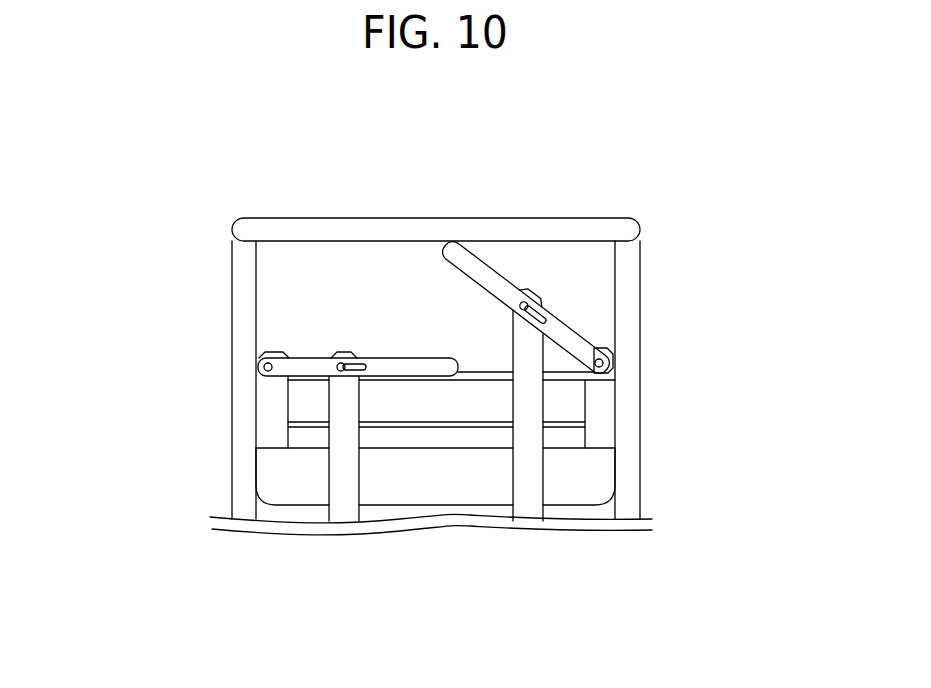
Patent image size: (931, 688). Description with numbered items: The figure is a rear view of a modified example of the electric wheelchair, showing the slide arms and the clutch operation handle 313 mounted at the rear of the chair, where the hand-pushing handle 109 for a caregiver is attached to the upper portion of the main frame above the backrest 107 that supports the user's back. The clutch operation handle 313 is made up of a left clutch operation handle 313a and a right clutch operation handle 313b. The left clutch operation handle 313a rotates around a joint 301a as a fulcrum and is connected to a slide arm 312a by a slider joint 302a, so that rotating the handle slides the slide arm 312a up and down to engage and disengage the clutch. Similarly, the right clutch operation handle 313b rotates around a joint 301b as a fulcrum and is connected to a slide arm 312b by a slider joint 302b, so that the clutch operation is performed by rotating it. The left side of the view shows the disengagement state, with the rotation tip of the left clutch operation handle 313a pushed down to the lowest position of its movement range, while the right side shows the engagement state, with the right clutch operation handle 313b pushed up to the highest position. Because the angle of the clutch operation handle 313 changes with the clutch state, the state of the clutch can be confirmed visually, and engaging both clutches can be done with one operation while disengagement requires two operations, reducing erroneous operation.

The backrest 107 is at (457, 402).
The hand-pushing handle 109 is at (570, 227).
The slide arm 312a is at (342, 400).
The slide arm 312b is at (527, 395).
The clutch operation handle 313 is at (435, 251).
The left clutch operation handle 313a is at (415, 365).
The right clutch operation handle 313b is at (482, 270).
The joint 301a is at (262, 361).
The joint 301b is at (607, 362).
The slider joint 302a is at (338, 363).
The slider joint 302b is at (540, 300).